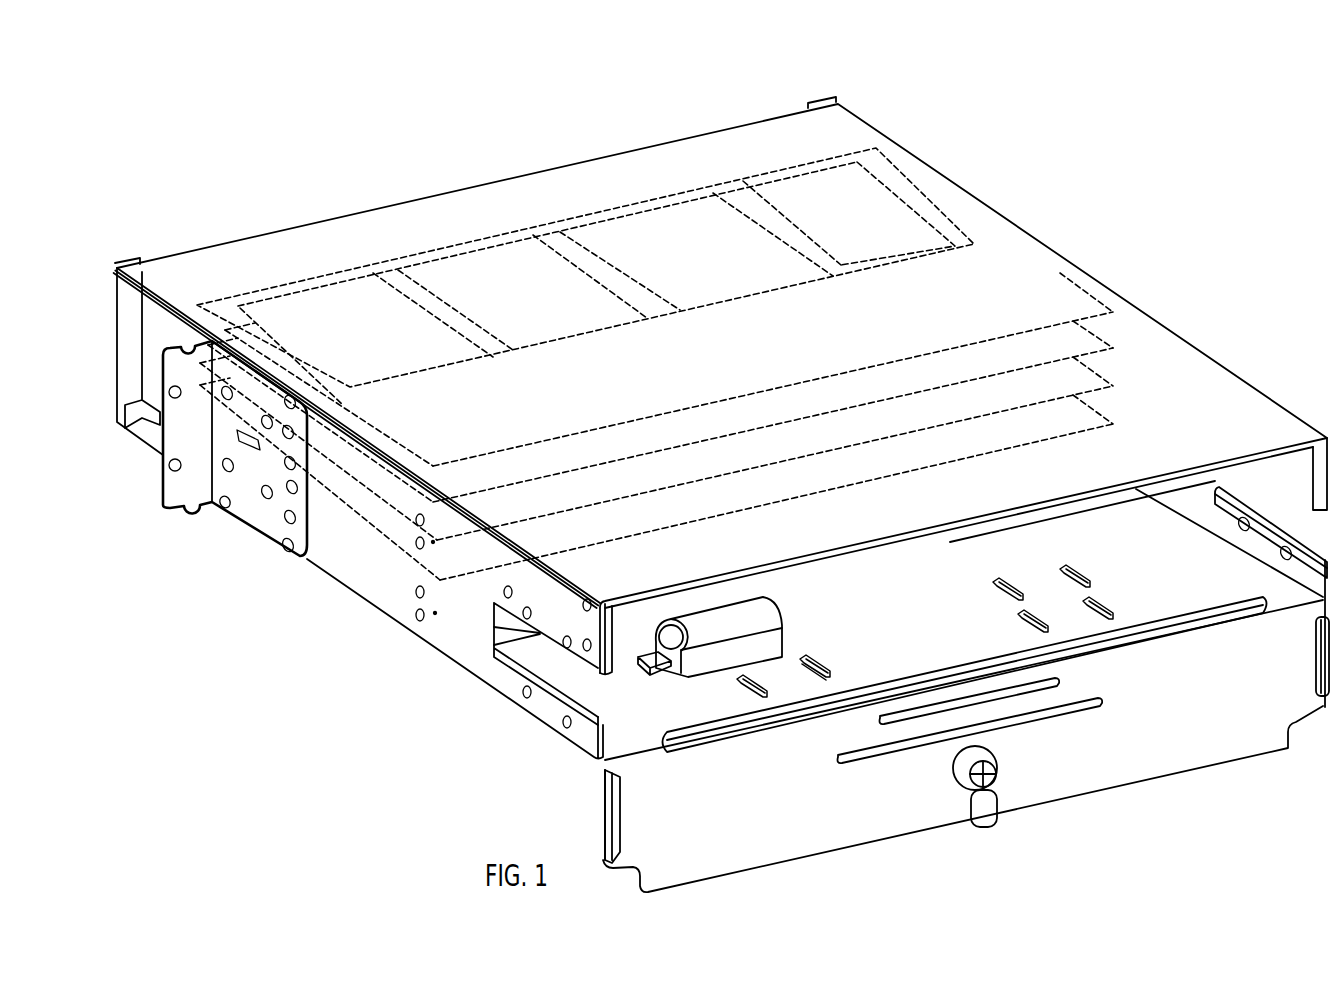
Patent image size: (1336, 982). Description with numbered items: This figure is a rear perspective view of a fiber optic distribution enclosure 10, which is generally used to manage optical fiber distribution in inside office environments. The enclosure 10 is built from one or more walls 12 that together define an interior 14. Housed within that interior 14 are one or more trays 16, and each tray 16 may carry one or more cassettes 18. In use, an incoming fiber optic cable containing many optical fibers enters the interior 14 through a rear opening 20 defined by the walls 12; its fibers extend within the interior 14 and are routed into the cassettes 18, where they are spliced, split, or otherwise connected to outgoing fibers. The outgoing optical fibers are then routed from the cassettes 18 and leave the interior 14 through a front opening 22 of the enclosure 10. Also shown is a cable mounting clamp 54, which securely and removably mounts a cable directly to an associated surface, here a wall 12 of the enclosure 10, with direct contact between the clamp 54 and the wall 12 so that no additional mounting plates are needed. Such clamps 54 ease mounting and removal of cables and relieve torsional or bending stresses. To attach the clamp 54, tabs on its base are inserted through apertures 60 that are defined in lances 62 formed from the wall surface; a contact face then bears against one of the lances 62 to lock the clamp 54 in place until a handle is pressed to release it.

The fiber optic distribution enclosure 10 is at (1103, 150).
The wall 12 is at (1185, 410).
The interior 14 is at (956, 613).
The tray 16 is at (733, 369).
The cassette 18 is at (487, 290).
The rear opening 20 is at (1228, 582).
The front opening 22 is at (148, 313).
The cable mounting clamp 54 is at (790, 625).
The aperture 60 is at (804, 680).
The lance 62 is at (812, 655).